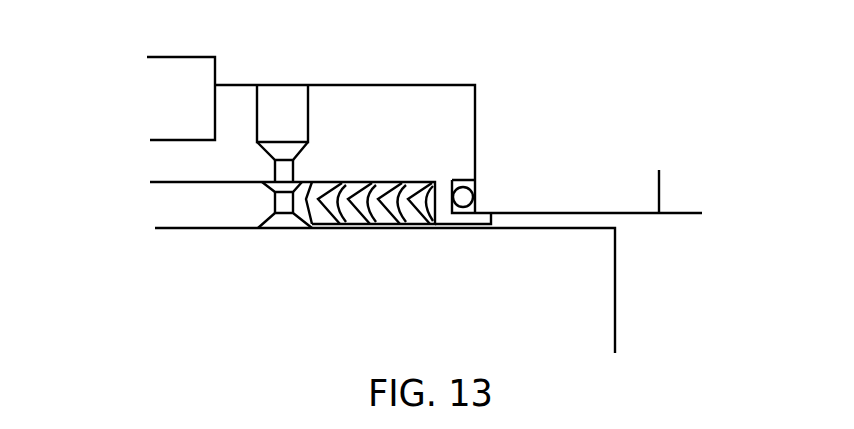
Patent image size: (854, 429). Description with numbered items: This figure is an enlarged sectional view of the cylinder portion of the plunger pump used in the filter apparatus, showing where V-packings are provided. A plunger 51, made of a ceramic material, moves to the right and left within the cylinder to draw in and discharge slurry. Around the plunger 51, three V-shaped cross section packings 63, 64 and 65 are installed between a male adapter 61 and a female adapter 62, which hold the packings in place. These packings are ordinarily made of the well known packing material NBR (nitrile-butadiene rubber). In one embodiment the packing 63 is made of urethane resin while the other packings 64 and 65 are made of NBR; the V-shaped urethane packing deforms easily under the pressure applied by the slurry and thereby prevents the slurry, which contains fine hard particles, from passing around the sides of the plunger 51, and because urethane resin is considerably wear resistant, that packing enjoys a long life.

The plunger 51 is at (603, 249).
The male adapter 61 is at (440, 224).
The female adapter 62 is at (315, 188).
The V-shaped cross section packing 63 is at (405, 224).
The V-shaped cross section packing 64 is at (372, 224).
The V-shaped cross section packing 65 is at (340, 224).